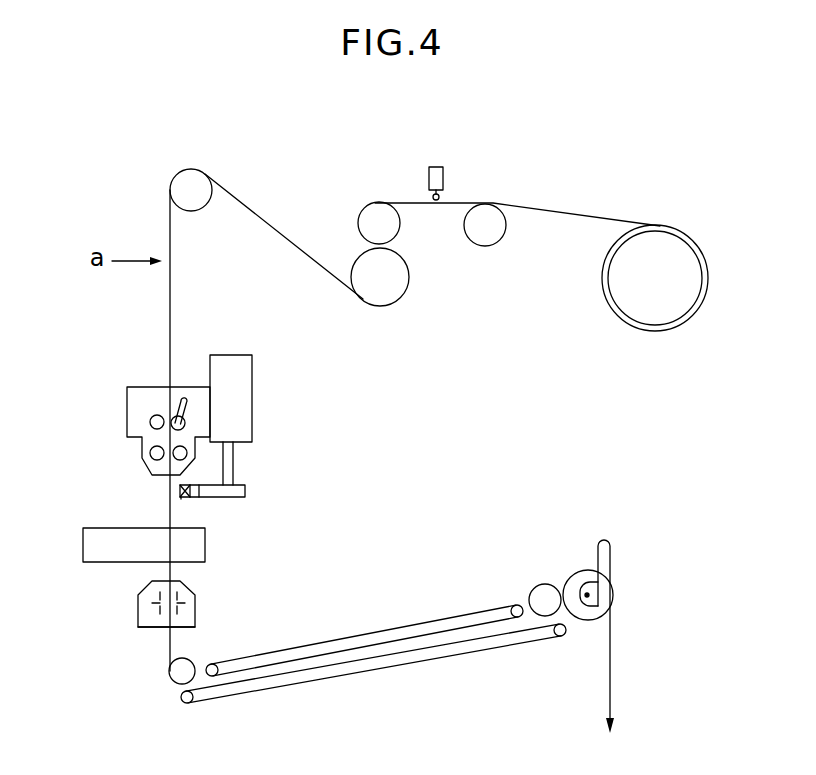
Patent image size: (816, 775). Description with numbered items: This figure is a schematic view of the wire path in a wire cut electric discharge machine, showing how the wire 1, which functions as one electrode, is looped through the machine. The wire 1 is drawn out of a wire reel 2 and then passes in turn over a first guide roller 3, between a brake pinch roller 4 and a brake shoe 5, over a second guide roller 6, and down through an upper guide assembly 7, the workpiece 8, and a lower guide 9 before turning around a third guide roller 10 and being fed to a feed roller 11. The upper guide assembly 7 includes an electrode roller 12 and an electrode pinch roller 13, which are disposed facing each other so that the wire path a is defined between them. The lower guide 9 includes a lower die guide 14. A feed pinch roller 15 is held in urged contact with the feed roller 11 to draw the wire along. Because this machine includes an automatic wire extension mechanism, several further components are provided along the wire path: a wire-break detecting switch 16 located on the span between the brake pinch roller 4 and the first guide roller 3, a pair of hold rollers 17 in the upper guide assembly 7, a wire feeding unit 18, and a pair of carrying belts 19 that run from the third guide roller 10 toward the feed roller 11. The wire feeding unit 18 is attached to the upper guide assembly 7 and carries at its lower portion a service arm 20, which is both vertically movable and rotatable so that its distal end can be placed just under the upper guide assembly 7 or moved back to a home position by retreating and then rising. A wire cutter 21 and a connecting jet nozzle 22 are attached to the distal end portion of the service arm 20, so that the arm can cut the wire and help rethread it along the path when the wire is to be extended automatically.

The wire 1 is at (580, 214).
The wire reel 2 is at (672, 250).
The first guide roller 3 is at (493, 210).
The brake pinch roller 4 is at (375, 218).
The brake shoe 5 is at (397, 283).
The second guide roller 6 is at (196, 188).
The upper guide assembly 7 is at (133, 397).
The workpiece 8 is at (83, 528).
The lower guide 9 is at (143, 628).
The third guide roller 10 is at (178, 677).
The feed roller 11 is at (540, 600).
The electrode roller 12 is at (150, 425).
The electrode pinch roller 13 is at (188, 420).
The lower die guide 14 is at (197, 604).
The feed pinch roller 15 is at (582, 582).
The wire-break detecting switch 16 is at (437, 166).
The hold rollers 17 is at (176, 465).
The wire feeding unit 18 is at (237, 413).
The carrying belts 19 is at (373, 630).
The service arm 20 is at (245, 488).
The wire cutter 21 is at (183, 500).
The connecting jet nozzle 22 is at (187, 498).